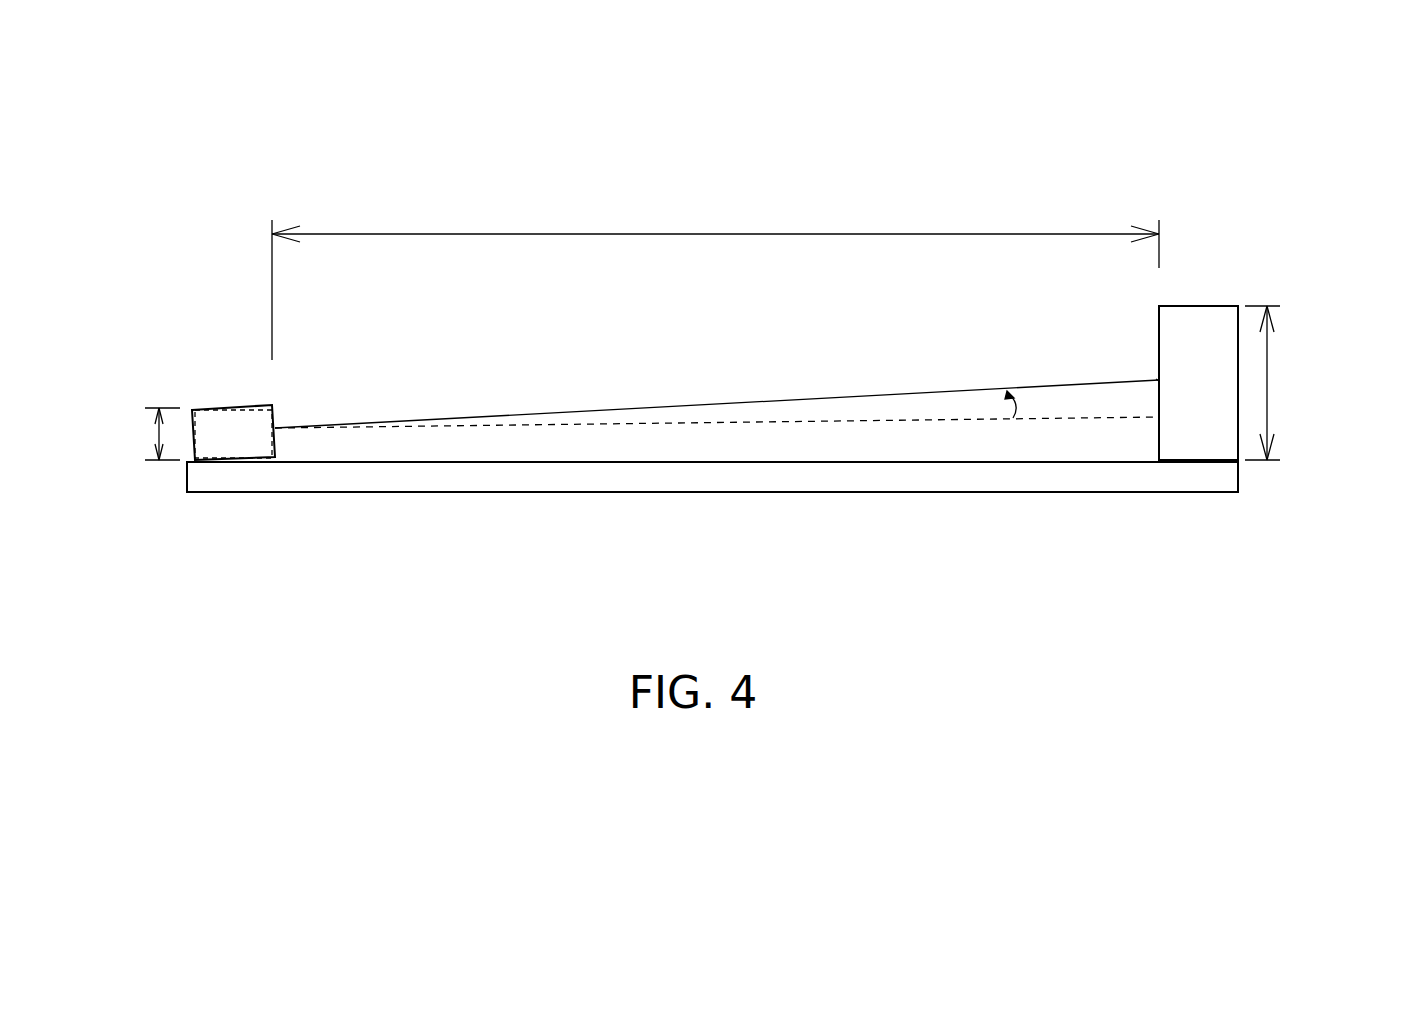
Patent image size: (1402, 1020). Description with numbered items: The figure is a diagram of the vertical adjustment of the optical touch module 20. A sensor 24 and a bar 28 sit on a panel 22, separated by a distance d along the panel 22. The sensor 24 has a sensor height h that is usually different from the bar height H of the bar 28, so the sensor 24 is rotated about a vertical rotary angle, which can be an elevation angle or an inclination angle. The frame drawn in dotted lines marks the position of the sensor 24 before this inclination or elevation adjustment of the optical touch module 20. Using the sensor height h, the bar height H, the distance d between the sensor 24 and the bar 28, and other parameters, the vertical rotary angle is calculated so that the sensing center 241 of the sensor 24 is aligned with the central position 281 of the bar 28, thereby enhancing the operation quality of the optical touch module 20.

The optical touch module 20 is at (1098, 108).
The panel 22 is at (667, 482).
The sensor 24 is at (225, 415).
The sensing center 241 is at (277, 427).
The bar 28 is at (1199, 316).
The central position 281 is at (1157, 378).